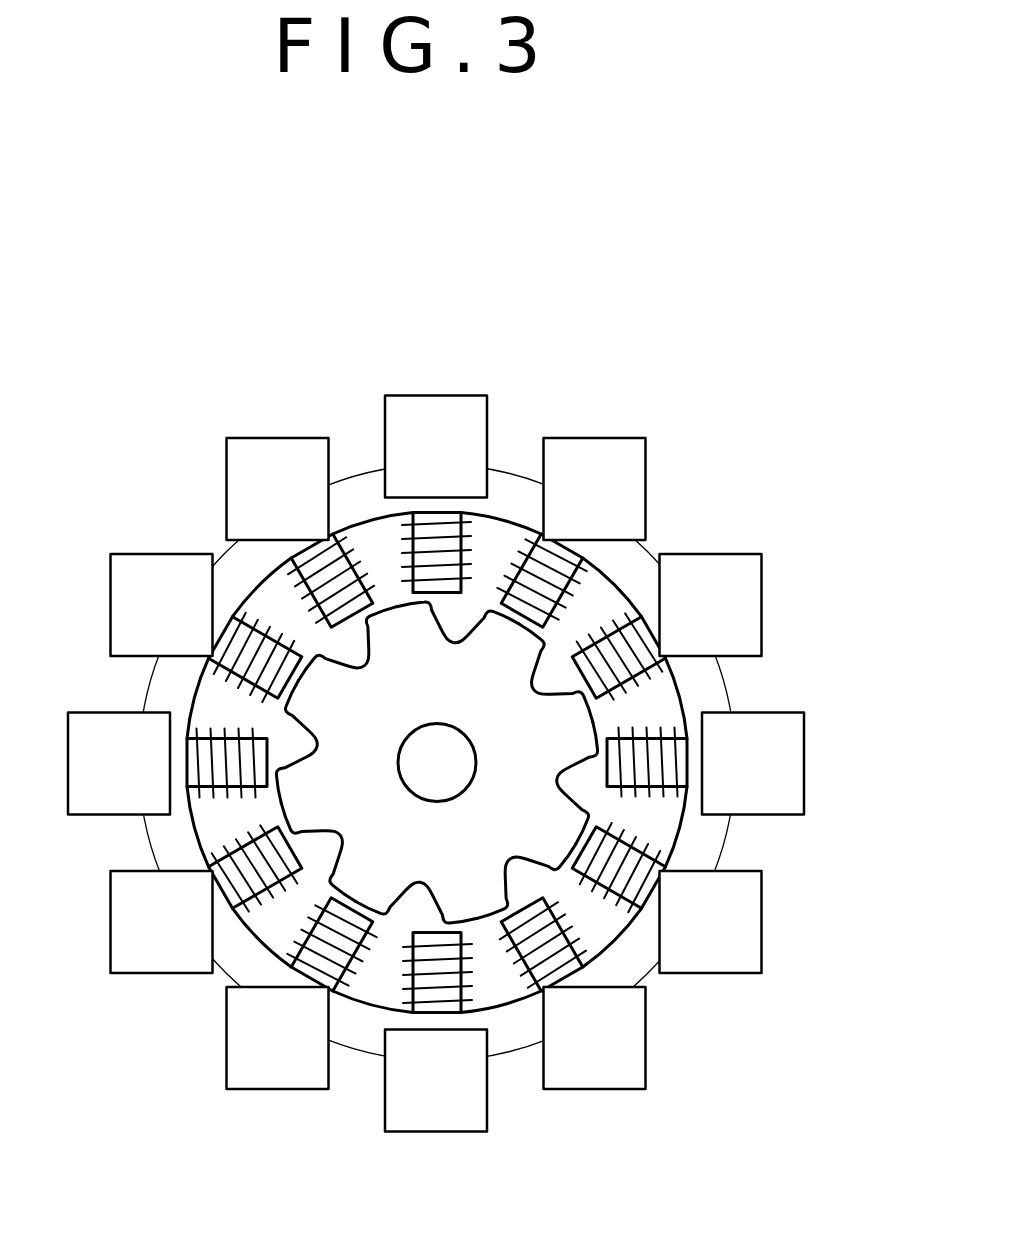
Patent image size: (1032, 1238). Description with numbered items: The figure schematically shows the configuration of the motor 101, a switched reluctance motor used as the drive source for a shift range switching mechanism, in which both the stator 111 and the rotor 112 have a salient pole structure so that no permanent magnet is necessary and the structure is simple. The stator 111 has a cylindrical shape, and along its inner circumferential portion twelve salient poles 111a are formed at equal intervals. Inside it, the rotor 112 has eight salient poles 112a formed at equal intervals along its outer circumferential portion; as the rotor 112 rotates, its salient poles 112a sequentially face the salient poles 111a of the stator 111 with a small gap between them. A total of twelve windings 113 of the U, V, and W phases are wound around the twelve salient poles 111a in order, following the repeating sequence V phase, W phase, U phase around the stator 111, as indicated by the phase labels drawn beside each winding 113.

The motor 101 is at (490, 696).
The stator 111 is at (436, 754).
The salient poles of the stator 111a is at (437, 592).
The rotor 112 is at (499, 702).
The salient poles of the rotor 112a is at (397, 633).
The windings 113 is at (527, 545).